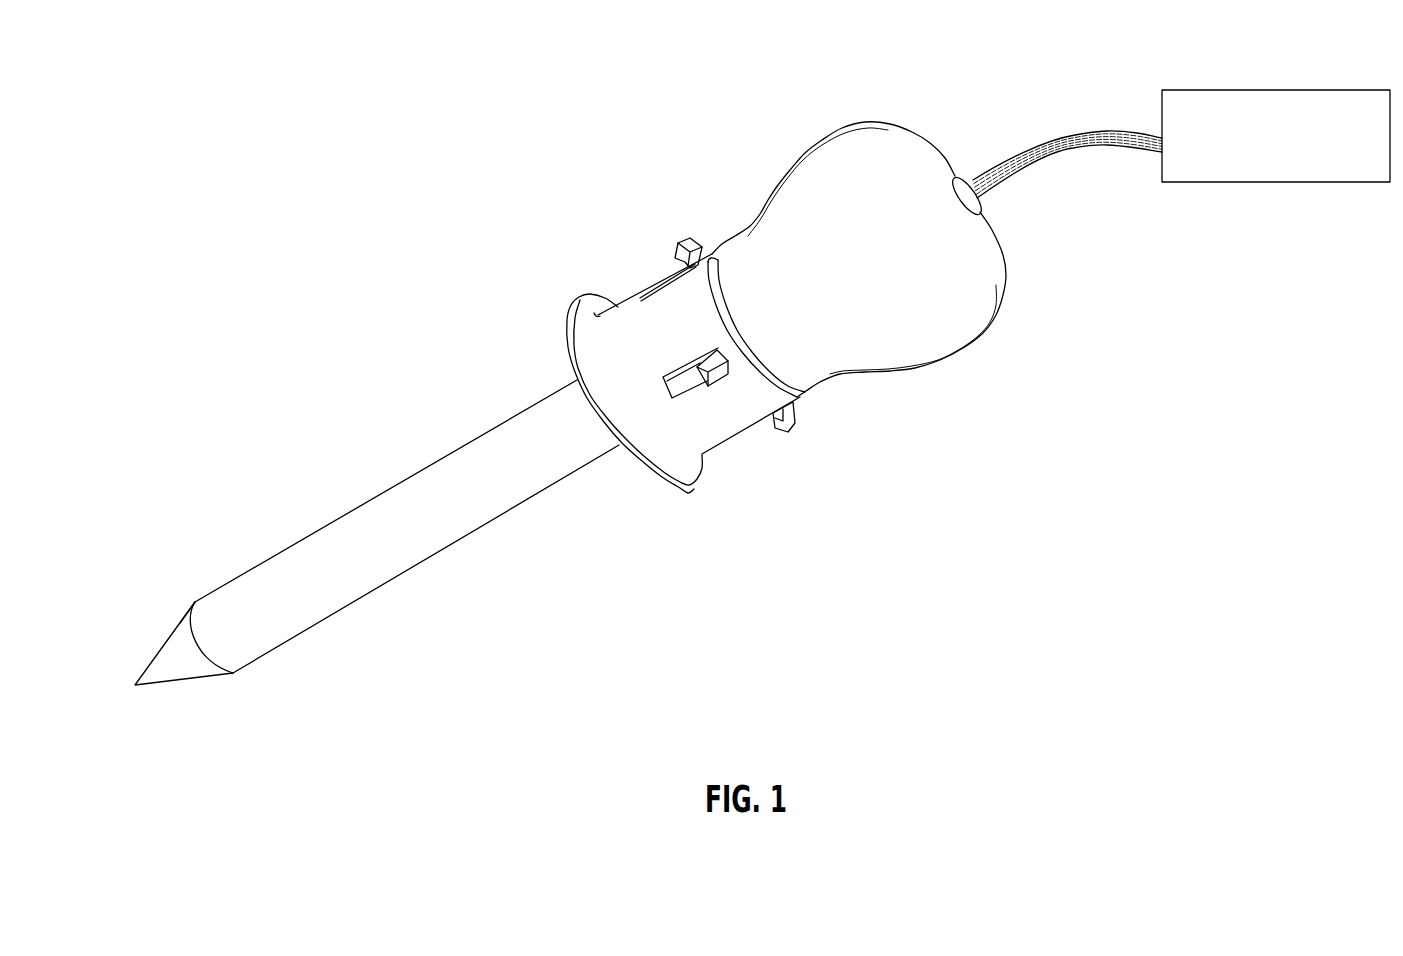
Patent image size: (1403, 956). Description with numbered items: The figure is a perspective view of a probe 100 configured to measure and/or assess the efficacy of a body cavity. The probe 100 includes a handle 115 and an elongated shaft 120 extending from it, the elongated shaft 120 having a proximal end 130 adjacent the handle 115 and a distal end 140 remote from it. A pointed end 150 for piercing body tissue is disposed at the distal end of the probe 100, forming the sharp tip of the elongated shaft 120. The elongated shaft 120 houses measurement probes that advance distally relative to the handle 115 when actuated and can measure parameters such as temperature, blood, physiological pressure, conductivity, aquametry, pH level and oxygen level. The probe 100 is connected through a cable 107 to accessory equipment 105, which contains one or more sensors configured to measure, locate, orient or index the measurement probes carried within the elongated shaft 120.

The probe 100 is at (372, 220).
The accessory equipment 105 is at (1297, 151).
The cable 107 is at (1067, 135).
The handle 115 is at (722, 423).
The elongated shaft 120 is at (372, 497).
The proximal end 130 is at (553, 390).
The distal end 140 is at (205, 585).
The pointed end 150 is at (172, 647).